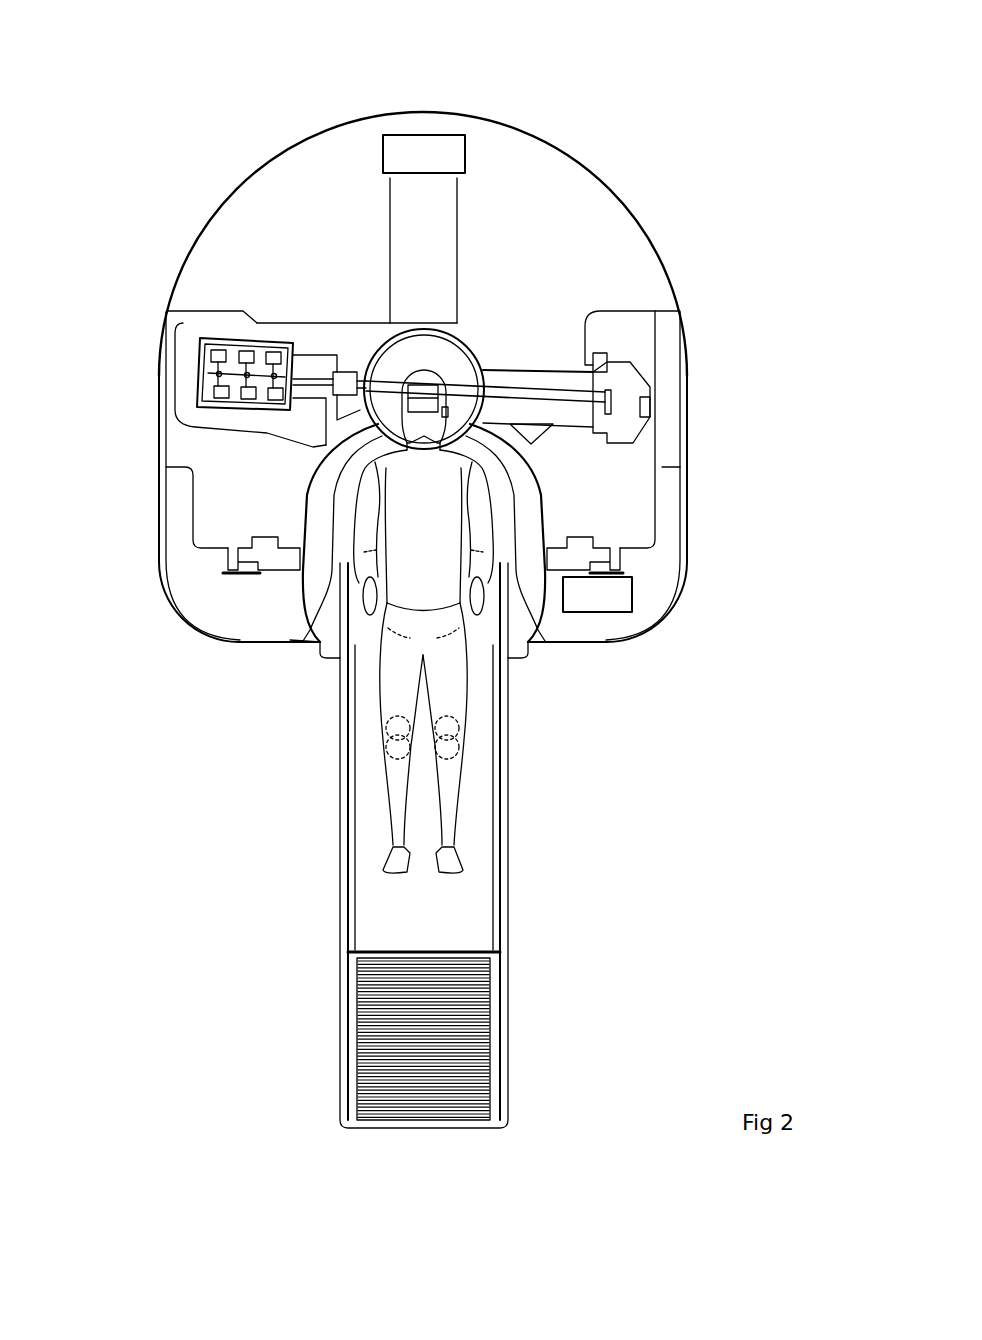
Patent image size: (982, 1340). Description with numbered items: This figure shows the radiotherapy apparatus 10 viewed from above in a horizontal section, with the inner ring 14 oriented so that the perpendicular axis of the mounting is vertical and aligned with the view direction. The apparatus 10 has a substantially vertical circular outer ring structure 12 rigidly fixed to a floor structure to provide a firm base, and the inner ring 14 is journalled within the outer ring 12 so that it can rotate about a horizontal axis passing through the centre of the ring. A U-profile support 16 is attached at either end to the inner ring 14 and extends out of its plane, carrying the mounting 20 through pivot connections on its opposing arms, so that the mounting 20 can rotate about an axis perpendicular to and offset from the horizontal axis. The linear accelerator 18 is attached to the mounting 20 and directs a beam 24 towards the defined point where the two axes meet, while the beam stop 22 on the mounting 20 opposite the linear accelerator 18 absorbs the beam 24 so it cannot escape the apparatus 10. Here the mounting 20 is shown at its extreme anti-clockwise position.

The apparatus 10 is at (217, 827).
The outer ring structure 12 is at (235, 630).
The inner ring 14 is at (593, 540).
The U-profile support 16 is at (427, 237).
The linear accelerator 18 is at (213, 408).
The mounting 20 is at (505, 355).
The beam stop 22 is at (628, 375).
The beam 24 is at (540, 388).